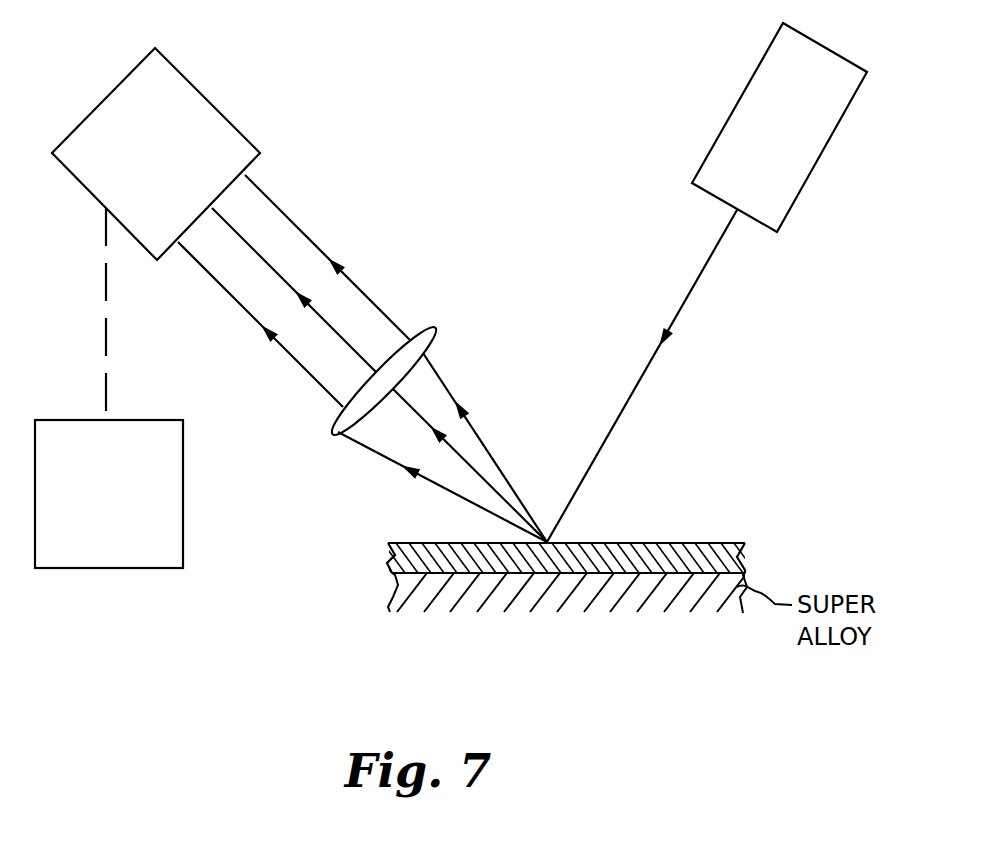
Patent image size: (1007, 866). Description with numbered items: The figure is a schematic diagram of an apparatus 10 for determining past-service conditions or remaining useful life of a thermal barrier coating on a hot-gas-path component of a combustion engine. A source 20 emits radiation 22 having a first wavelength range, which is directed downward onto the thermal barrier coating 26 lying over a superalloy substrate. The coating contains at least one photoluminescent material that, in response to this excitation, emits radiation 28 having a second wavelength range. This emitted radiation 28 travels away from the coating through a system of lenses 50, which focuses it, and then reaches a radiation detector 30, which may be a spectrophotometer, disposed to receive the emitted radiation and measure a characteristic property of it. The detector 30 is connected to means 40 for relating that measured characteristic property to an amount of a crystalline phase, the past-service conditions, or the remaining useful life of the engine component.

The apparatus 10 is at (466, 57).
The source of radiation 20 is at (788, 193).
The radiation having a first wavelength range 22 is at (699, 277).
The thermal barrier coating 26 is at (677, 550).
The radiation having a second wavelength range 28 is at (283, 212).
The radiation detector 30 is at (163, 90).
The means for relating 40 is at (95, 555).
The lenses 50 is at (436, 326).